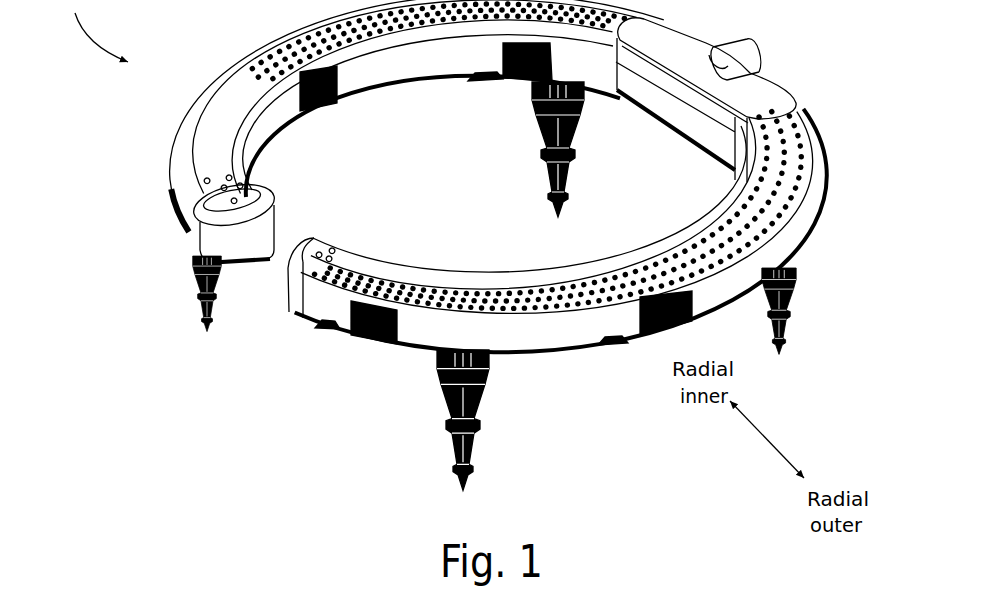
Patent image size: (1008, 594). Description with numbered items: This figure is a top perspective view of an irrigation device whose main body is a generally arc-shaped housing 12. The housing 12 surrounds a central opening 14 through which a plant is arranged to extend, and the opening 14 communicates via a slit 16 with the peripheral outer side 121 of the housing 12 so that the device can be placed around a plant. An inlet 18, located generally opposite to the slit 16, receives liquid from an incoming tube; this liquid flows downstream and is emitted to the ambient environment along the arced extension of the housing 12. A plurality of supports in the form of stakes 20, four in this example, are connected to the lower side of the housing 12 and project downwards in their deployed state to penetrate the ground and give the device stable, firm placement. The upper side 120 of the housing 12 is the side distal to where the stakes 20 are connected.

The housing 12 is at (518, 206).
The opening 14 is at (487, 196).
The slit 16 is at (263, 297).
The inlet 18 is at (779, 33).
The stakes 20 is at (586, 219).
The upper side 120 is at (227, 101).
The peripheral outer side 121 is at (563, 333).